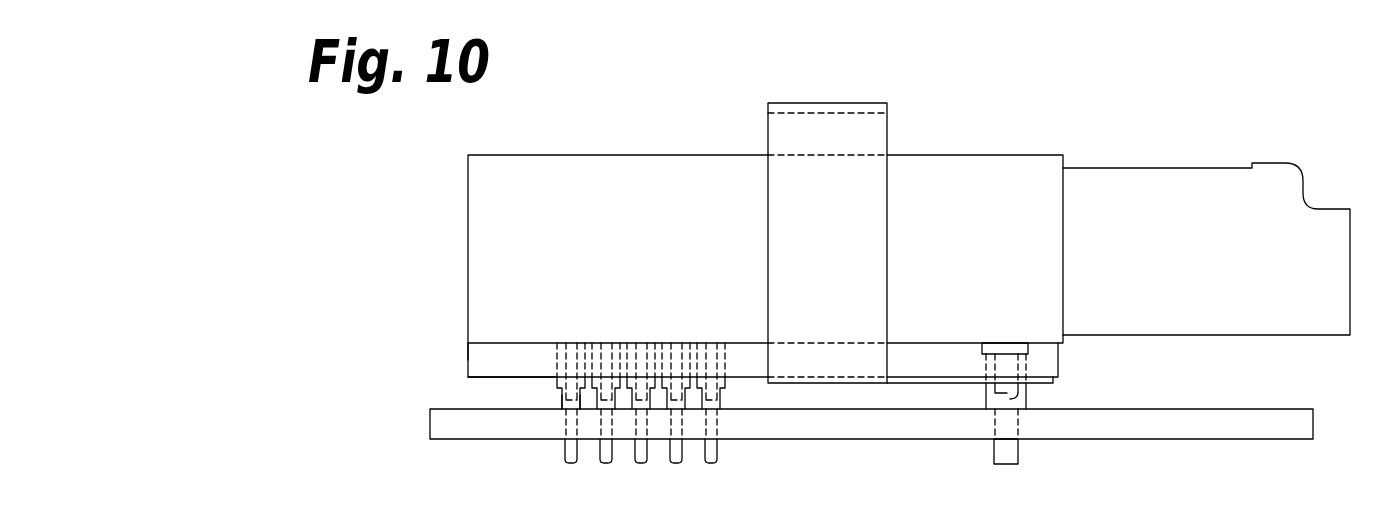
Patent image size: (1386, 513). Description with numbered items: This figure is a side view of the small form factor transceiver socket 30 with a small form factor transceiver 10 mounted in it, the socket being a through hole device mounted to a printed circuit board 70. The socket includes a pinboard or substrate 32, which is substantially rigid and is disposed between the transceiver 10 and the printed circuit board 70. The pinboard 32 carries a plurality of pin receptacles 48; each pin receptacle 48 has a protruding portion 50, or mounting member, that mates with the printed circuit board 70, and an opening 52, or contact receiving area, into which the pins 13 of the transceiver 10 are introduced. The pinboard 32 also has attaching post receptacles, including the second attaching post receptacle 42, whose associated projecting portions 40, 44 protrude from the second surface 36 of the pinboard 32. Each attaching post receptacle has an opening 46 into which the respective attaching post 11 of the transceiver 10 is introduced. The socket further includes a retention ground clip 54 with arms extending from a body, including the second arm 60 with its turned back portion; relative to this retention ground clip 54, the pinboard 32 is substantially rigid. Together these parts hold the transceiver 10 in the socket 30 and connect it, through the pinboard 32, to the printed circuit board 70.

The small form factor transceiver 10 is at (1029, 154).
The attaching post 11 is at (1025, 392).
The pins 13 is at (560, 402).
The small form factor transceiver socket 30 is at (490, 363).
The pinboard 32 is at (470, 347).
The second surface 36 is at (520, 377).
The projecting portion 40 is at (623, 428).
The second attaching post receptacle 42 is at (1010, 399).
The projecting portion 44 is at (1018, 450).
The opening 46 is at (1003, 343).
The pin receptacles 48 is at (720, 397).
The protruding portion 50 is at (717, 450).
The opening 52 is at (717, 362).
The retention ground clip 54 is at (853, 384).
The second arm 60 is at (887, 112).
The printed circuit board 70 is at (430, 413).